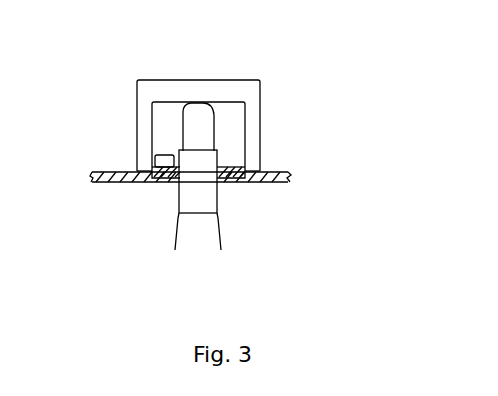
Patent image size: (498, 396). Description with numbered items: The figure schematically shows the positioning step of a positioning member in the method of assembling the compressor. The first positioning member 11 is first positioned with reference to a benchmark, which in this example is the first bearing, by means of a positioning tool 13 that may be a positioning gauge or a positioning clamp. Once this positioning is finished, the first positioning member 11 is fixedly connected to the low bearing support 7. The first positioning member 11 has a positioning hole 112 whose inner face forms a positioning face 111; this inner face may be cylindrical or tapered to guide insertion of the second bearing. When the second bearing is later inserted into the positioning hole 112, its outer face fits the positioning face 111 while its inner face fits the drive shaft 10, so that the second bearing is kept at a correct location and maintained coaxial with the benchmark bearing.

The low bearing support 7 is at (232, 181).
The drive shaft 10 is at (198, 128).
The first positioning member 11 is at (244, 165).
The positioning tool 13 is at (260, 101).
The positioning face 111 is at (220, 173).
The positioning hole 112 is at (170, 186).